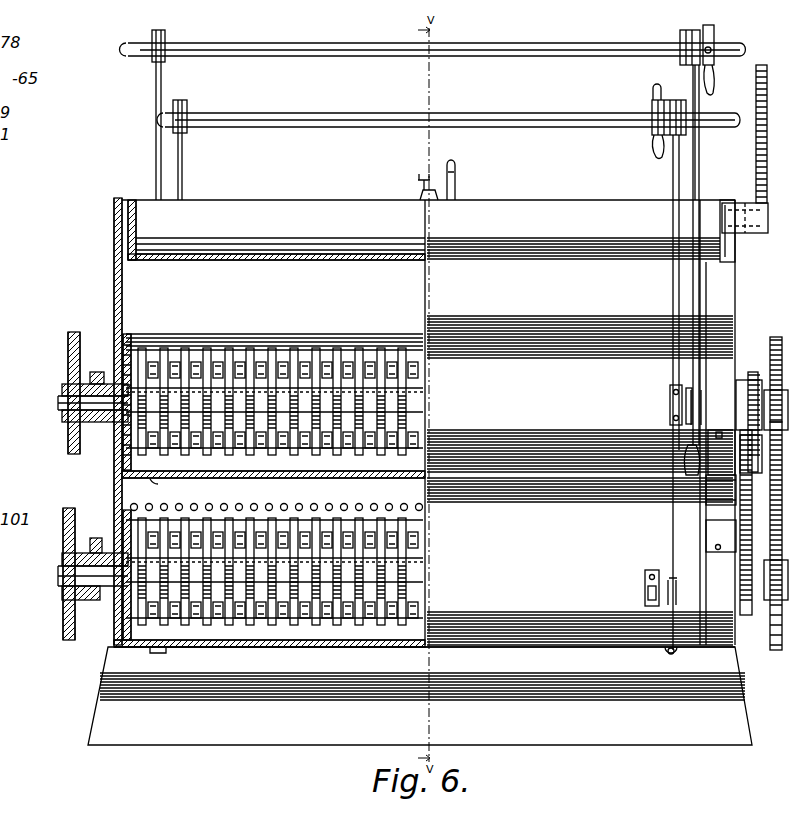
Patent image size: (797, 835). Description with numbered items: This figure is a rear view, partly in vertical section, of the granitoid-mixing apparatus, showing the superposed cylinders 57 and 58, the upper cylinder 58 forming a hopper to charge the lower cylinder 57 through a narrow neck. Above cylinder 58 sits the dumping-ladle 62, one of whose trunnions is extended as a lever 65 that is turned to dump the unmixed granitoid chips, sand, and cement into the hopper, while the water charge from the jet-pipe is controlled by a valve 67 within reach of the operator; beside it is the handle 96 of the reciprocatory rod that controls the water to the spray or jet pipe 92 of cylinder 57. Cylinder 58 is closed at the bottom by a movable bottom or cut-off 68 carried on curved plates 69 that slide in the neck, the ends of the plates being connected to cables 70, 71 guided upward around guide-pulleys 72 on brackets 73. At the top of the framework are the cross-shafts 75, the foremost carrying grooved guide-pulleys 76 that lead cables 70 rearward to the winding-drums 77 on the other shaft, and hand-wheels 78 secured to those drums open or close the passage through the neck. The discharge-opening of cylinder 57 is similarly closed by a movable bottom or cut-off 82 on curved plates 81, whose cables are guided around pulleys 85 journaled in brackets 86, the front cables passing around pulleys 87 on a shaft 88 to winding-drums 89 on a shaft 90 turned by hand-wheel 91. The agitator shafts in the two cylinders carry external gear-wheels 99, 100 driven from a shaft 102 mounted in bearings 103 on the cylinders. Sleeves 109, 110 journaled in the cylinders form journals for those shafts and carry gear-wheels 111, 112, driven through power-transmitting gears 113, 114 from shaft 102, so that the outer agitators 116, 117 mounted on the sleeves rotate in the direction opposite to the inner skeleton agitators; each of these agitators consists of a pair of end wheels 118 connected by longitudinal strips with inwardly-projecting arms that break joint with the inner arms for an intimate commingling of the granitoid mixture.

The cylinder 57 is at (580, 601).
The cylinder 58 is at (580, 394).
The dumping-ladle 62 is at (428, 231).
The lever 65 is at (756, 155).
The valve 67 is at (429, 176).
The movable bottom or cut-off 68 is at (470, 502).
The curved plates 69 is at (158, 484).
The cables 70 is at (161, 84).
The cables 71 is at (713, 422).
The guide-pulleys 72 is at (700, 406).
The brackets 73 is at (670, 401).
The cross-shafts 75 is at (389, 43).
The grooved guide-pulleys 76 is at (165, 45).
The winding-drums 77 is at (680, 38).
The hand-wheels 78 is at (716, 87).
The curved plates 81 is at (170, 650).
The movable bottom or cut-off 82 is at (374, 652).
The pulleys 85 is at (679, 588).
The brackets 86 is at (645, 592).
The pulleys 87 is at (189, 110).
The shaft 88 is at (448, 108).
The winding-drums 89 is at (652, 114).
The shaft 90 is at (532, 104).
The hand-wheel 91 is at (652, 155).
The spray or jet pipe 92 is at (280, 497).
The handle 96 is at (457, 167).
The gear-wheel 99 is at (72, 332).
The gear-wheel 100 is at (72, 508).
The shaft 102 is at (492, 505).
The bearings 103 is at (722, 467).
The sleeve 109 is at (72, 380).
The sleeve 110 is at (78, 592).
The gear-wheel 111 is at (96, 372).
The gear-wheel 112 is at (96, 538).
The power-transmitting gear 113 is at (732, 412).
The power-transmitting gear 114 is at (718, 536).
The agitator 116 is at (273, 465).
The agitator 117 is at (290, 647).
The end wheels 118 is at (92, 655).